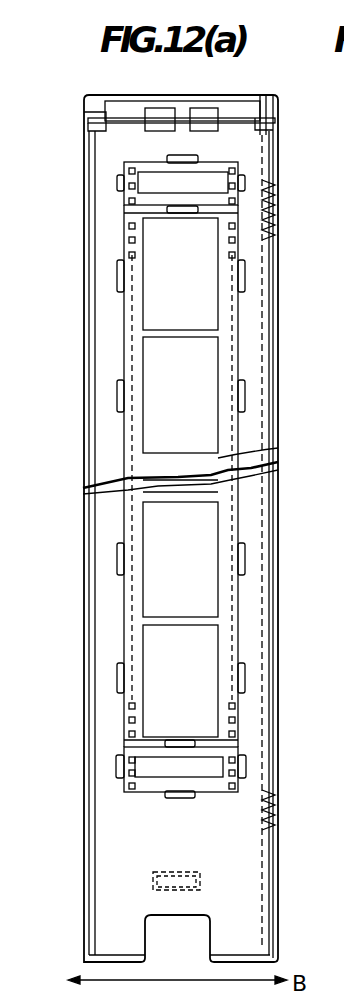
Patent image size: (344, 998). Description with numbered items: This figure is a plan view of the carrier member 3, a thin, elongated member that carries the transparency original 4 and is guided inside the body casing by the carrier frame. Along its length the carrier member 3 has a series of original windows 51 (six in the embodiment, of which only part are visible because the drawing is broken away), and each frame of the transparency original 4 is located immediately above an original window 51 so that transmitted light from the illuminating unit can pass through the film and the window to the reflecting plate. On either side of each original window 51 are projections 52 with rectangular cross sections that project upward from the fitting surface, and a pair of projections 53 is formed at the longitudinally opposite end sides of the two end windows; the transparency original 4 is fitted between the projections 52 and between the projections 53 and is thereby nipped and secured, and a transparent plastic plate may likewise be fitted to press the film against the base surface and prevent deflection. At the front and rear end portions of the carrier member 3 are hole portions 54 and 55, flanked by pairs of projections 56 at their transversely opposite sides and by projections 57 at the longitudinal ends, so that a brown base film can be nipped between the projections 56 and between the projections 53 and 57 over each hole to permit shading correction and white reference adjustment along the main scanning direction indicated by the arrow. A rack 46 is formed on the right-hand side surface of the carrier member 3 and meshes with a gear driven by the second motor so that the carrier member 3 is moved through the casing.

The carrier member 3 is at (279, 690).
The transparency original 4 is at (235, 512).
The rack 46 is at (273, 243).
The original window 51 is at (208, 316).
The projection 52 is at (117, 276).
The projection 53 is at (184, 210).
The hole portion 54 is at (233, 175).
The hole portion 55 is at (210, 772).
The projection 56 is at (117, 182).
The projection 57 is at (196, 160).